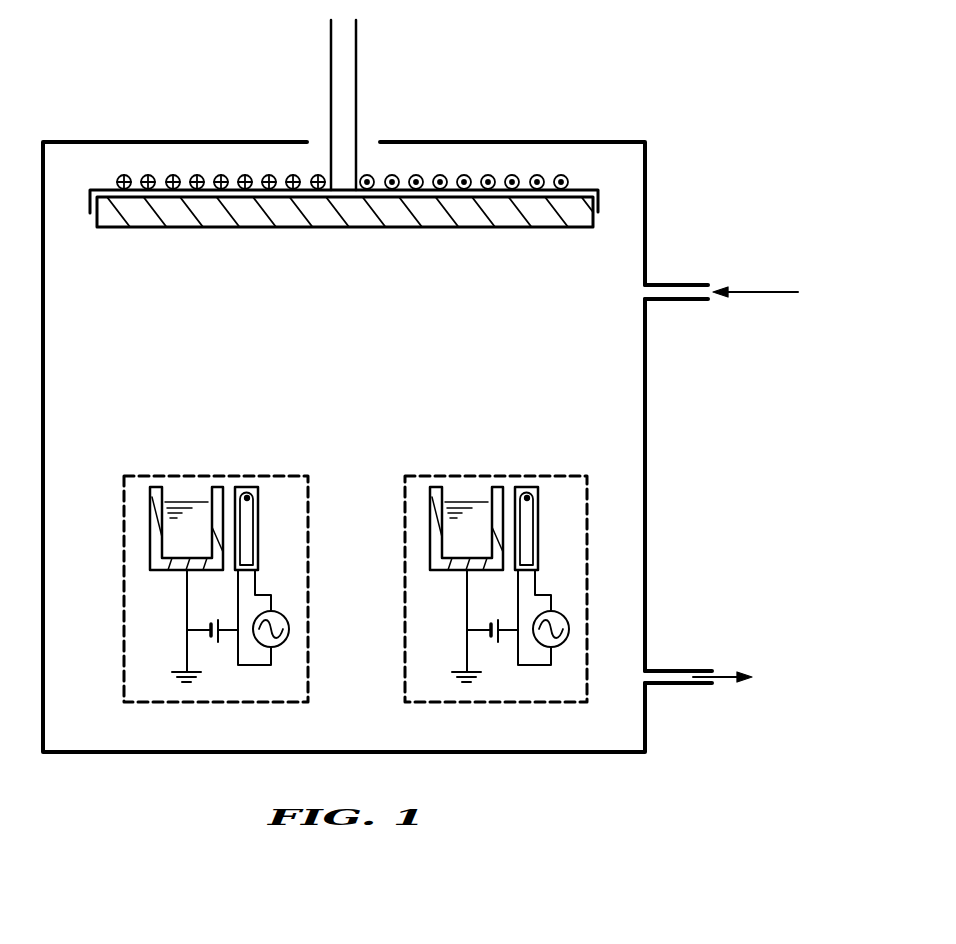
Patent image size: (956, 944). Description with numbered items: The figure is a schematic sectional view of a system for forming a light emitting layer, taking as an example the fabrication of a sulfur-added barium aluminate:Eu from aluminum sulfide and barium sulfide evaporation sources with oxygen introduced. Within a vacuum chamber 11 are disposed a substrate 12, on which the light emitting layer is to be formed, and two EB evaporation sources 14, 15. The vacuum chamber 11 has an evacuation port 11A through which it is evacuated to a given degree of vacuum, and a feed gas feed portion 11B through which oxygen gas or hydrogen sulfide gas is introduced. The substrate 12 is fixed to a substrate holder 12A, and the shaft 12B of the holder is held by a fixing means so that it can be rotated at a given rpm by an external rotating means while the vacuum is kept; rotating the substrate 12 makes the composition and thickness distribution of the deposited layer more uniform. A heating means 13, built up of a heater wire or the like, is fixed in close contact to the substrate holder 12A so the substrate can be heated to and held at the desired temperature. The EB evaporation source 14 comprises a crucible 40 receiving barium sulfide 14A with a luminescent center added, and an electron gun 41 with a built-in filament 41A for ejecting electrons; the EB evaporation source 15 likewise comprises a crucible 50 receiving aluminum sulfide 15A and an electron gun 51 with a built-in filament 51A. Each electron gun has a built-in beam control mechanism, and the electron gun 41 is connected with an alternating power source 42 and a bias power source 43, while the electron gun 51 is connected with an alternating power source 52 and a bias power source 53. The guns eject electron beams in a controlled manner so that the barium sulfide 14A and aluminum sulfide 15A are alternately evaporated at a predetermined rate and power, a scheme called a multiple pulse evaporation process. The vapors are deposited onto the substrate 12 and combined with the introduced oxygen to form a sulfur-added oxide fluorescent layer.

The vacuum chamber 11 is at (577, 142).
The evacuation port 11A is at (680, 686).
The feed gas feed portion 11B is at (680, 283).
The substrate 12 is at (430, 215).
The substrate holder 12A is at (600, 196).
The shaft 12B is at (358, 95).
The heating means 13 is at (446, 178).
The EB evaporation source 14 is at (493, 474).
The barium sulfide 14A is at (445, 510).
The EB evaporation source 15 is at (214, 474).
The aluminum sulfide 15A is at (165, 510).
The crucible 40 is at (430, 565).
The electron gun 41 is at (542, 492).
The filament 41A is at (536, 504).
The alternating power source 42 is at (570, 629).
The bias power source 43 is at (500, 642).
The crucible 50 is at (150, 565).
The electron gun 51 is at (262, 492).
The filament 51A is at (256, 504).
The alternating power source 52 is at (290, 629).
The bias power source 53 is at (220, 642).